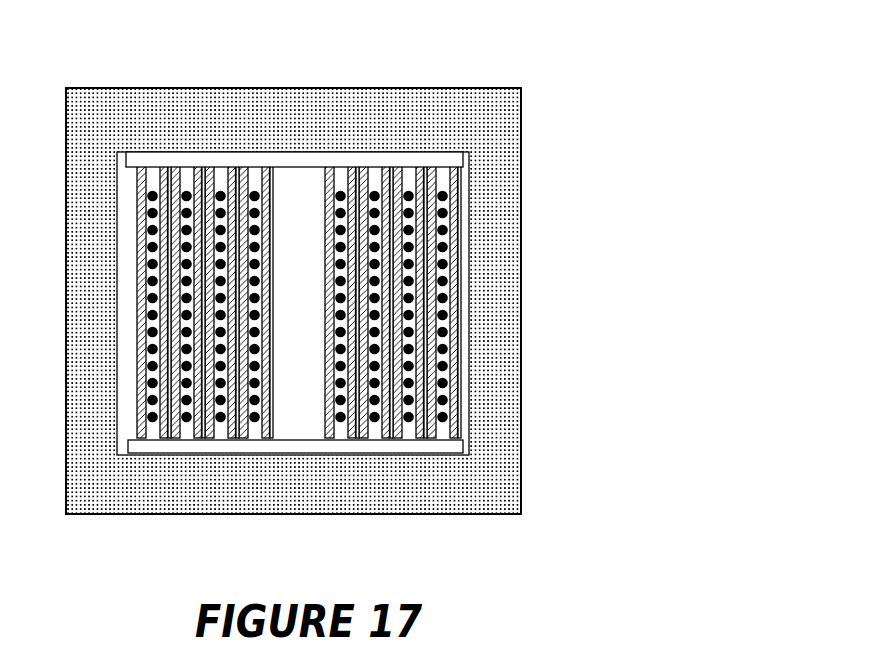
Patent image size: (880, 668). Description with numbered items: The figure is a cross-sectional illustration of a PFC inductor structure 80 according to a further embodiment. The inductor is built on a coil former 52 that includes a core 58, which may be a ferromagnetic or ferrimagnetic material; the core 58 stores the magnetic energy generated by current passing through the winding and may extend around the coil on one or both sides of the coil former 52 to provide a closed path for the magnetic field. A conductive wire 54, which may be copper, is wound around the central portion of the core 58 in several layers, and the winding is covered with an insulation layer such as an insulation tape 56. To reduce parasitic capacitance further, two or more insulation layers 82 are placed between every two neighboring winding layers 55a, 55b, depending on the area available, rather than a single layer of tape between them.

The inductor structure 80 is at (505, 66).
The insulation layers 82 is at (398, 170).
The coil former 52 is at (173, 448).
The conductive wire 54 is at (450, 297).
The winding layer 55a is at (371, 190).
The winding layer 55b is at (422, 190).
The insulation tape 56 is at (455, 230).
The core 58 is at (80, 282).